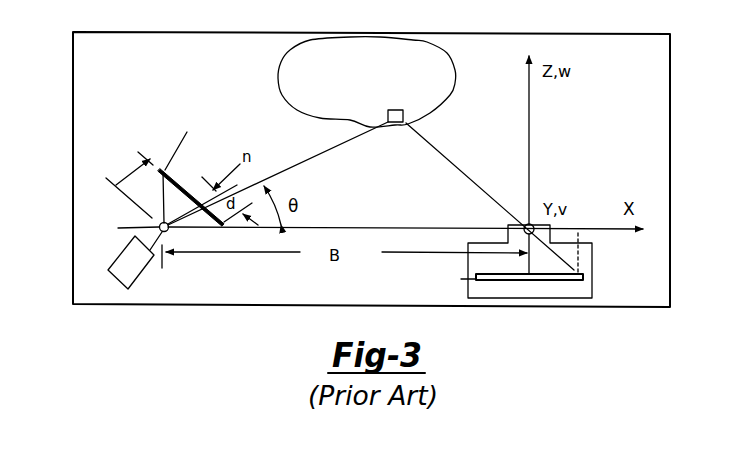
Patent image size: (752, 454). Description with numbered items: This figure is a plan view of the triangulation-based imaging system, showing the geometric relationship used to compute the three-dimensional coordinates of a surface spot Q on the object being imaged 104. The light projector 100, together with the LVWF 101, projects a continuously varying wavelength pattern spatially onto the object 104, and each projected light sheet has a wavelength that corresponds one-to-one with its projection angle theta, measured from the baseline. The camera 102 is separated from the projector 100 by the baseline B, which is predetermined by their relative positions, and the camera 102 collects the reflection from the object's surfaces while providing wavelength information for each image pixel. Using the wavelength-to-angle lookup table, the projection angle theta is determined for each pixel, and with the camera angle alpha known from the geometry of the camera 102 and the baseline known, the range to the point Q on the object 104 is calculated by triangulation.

The light projector 100 is at (135, 268).
The LVWF 101 is at (161, 167).
The camera 102 is at (588, 297).
The object being imaged 104 is at (414, 37).